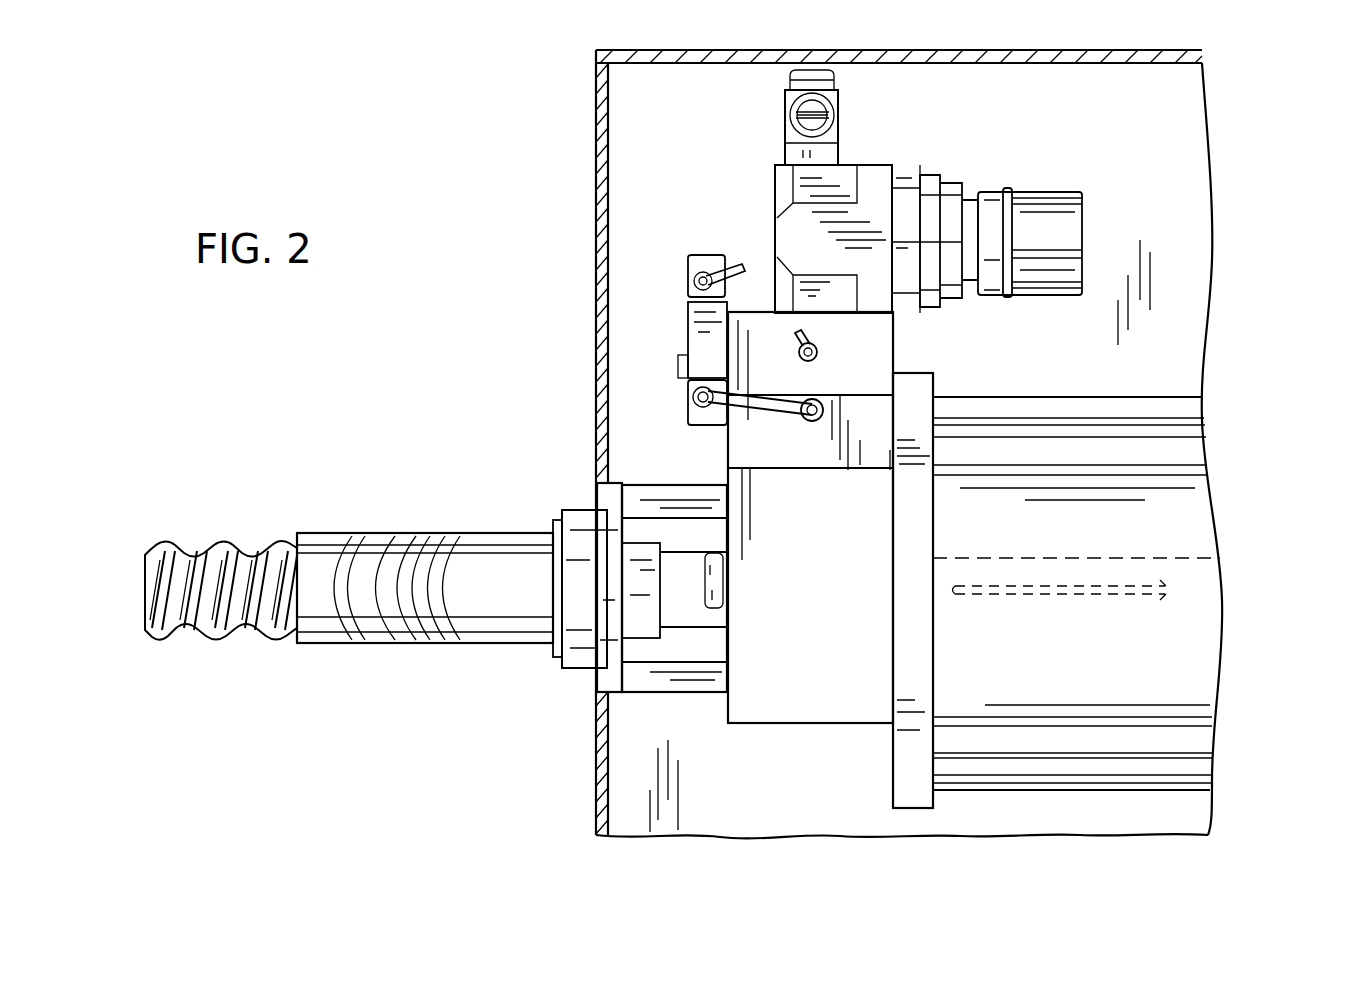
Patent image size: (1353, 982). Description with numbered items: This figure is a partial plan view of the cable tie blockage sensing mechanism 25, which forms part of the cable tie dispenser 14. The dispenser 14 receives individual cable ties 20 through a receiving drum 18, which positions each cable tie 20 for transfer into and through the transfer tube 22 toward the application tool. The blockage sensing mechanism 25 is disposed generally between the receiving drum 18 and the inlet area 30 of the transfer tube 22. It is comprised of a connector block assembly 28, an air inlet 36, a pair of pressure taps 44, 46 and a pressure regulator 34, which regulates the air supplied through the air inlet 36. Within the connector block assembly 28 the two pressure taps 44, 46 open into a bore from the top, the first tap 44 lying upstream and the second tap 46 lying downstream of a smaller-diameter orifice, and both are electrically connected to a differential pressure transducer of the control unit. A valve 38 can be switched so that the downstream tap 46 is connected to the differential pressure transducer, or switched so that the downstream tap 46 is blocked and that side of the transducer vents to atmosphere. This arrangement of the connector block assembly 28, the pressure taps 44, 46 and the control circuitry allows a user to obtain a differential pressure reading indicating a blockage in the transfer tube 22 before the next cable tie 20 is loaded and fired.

The cable tie dispenser 14 is at (595, 137).
The blockage sensing mechanism 25 is at (660, 225).
The air inlet 36 is at (826, 90).
The pressure regulator 34 is at (1085, 228).
The valve 38 is at (685, 337).
The upstream pressure tap 44 is at (812, 343).
The downstream pressure tap 46 is at (818, 400).
The connector block assembly 28 is at (765, 728).
The receiving drum 18 is at (1185, 517).
The cable tie 20 is at (1160, 600).
The inlet area 30 is at (512, 520).
The transfer tube 22 is at (219, 540).